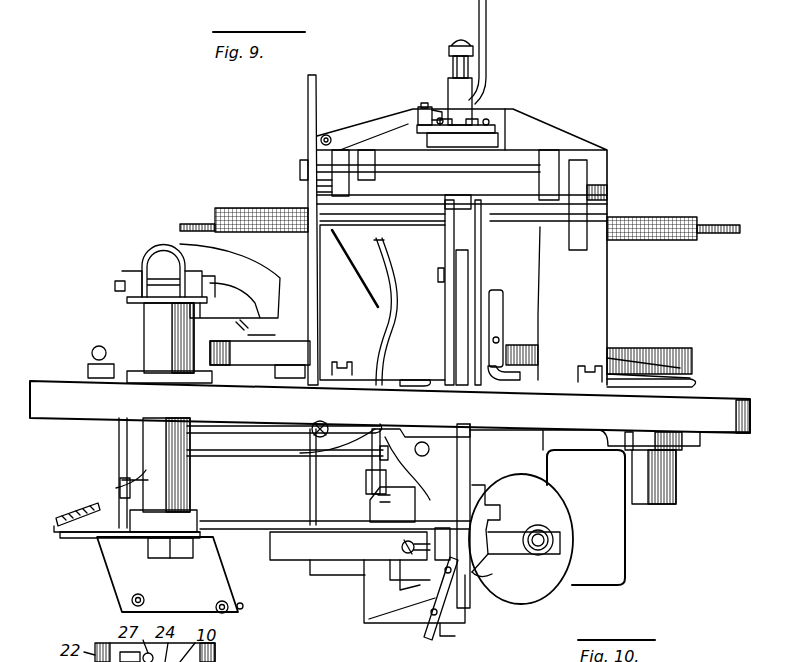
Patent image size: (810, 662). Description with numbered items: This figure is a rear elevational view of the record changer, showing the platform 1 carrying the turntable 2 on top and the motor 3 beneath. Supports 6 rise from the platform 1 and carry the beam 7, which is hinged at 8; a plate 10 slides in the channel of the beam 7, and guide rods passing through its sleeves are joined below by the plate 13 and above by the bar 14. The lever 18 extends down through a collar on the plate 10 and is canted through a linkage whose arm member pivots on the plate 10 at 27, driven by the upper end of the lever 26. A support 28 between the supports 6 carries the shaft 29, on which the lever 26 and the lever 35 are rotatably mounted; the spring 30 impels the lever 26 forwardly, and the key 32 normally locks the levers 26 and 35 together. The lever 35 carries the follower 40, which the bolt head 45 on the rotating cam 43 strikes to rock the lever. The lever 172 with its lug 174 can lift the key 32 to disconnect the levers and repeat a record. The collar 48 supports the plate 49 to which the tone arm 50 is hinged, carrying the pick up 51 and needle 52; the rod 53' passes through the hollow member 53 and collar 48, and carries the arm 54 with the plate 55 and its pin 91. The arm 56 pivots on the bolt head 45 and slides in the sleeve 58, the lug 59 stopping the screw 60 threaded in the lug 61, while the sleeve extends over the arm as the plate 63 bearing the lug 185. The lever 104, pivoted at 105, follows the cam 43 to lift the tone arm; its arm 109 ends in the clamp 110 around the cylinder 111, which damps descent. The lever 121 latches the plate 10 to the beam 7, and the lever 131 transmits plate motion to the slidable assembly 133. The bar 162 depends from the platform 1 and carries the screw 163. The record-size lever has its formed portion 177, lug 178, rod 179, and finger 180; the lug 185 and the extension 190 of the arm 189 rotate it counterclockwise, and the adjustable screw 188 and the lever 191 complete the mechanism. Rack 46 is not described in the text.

The support or platform 1 is at (722, 403).
The turntable 2 is at (232, 360).
The motor 3 is at (612, 540).
The supports 6 is at (355, 318).
The beam 7 is at (512, 140).
The hinge mounting of beam 8 is at (505, 175).
The plate 10 is at (405, 132).
The plate 13 is at (420, 195).
The bar 14 is at (450, 50).
The lever 18 is at (487, 16).
The lever 26 is at (486, 254).
The pivot of arm member on plate 27 is at (462, 120).
The support 28 is at (470, 270).
The shaft 29 is at (520, 345).
The spring 30 is at (502, 298).
The key 32 is at (480, 386).
The lever 35 is at (495, 482).
The follower 40 is at (500, 515).
The cam 43 is at (555, 588).
The bolt head 45 is at (552, 534).
The rack 46 is at (680, 204).
The collar 48 is at (146, 328).
The plate 49 is at (127, 300).
The tone arm 50 is at (212, 248).
The pick up or reproducer 51 is at (268, 280).
The needle 52 is at (250, 332).
The hollow member 53 is at (138, 473).
The rod 53' is at (130, 547).
The arm 54 is at (180, 558).
The plate 55 is at (120, 578).
The arm 56 is at (512, 563).
The sleeve 58 is at (300, 548).
The lug 59 is at (440, 528).
The screw 60 is at (413, 562).
The lug 61 is at (402, 545).
The plate 63 is at (300, 521).
The pin 91 is at (243, 608).
The lever 104 is at (262, 433).
The pivot of lever 105 is at (322, 421).
The arm 109 is at (430, 429).
The clamp 110 is at (684, 442).
The cylinder 111 is at (676, 484).
The lever 121 is at (426, 102).
The lever 131 is at (446, 243).
The slidable assembly 133 is at (420, 392).
The bar 162 is at (472, 446).
The screw 163 is at (470, 598).
The lever 172 is at (640, 362).
The lug 174 is at (540, 368).
The formed upper end portion of lever 177 is at (390, 280).
The lug 178 is at (372, 478).
The rod 179 is at (226, 458).
The finger 180 is at (122, 486).
The lug 185 is at (372, 500).
The adjustable screw 188 is at (78, 502).
The arm 189 is at (372, 626).
The extension 190 is at (370, 509).
The lever 191 is at (692, 388).